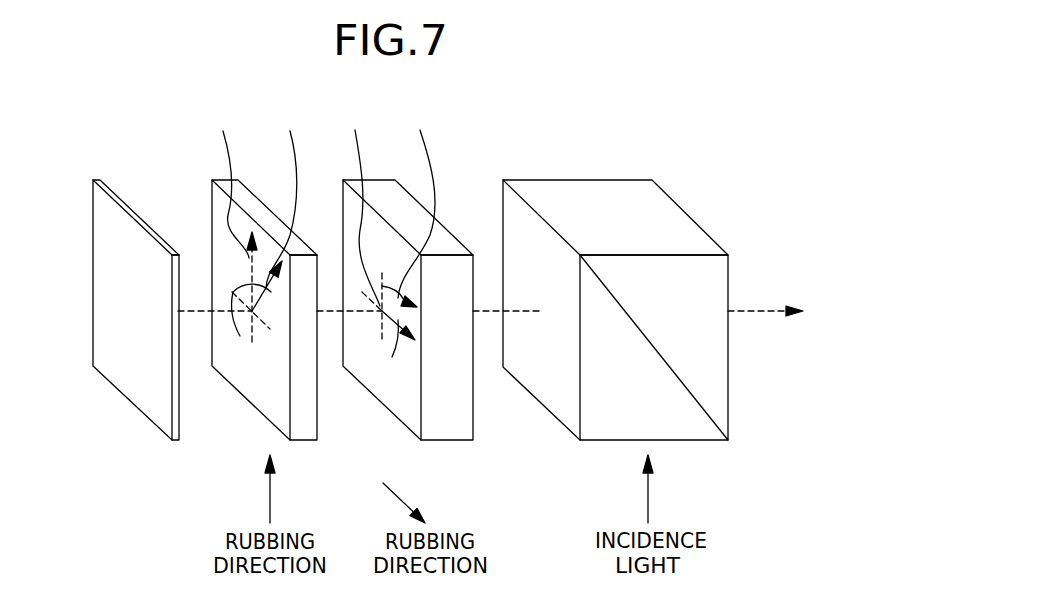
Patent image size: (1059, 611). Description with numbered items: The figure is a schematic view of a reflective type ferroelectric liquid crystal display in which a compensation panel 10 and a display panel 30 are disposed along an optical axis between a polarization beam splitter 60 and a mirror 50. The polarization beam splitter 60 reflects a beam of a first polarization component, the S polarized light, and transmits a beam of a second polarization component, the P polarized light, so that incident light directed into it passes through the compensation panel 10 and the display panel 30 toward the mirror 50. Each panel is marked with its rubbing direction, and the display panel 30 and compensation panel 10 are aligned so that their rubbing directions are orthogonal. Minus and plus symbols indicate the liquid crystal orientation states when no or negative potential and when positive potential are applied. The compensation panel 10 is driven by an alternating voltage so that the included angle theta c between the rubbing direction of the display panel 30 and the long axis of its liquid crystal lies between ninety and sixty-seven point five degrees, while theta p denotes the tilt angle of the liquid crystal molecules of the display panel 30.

The mirror 50 is at (134, 407).
The display panel 30 is at (253, 407).
The compensation panel 10 is at (385, 407).
The polarization beam splitter 60 is at (557, 418).